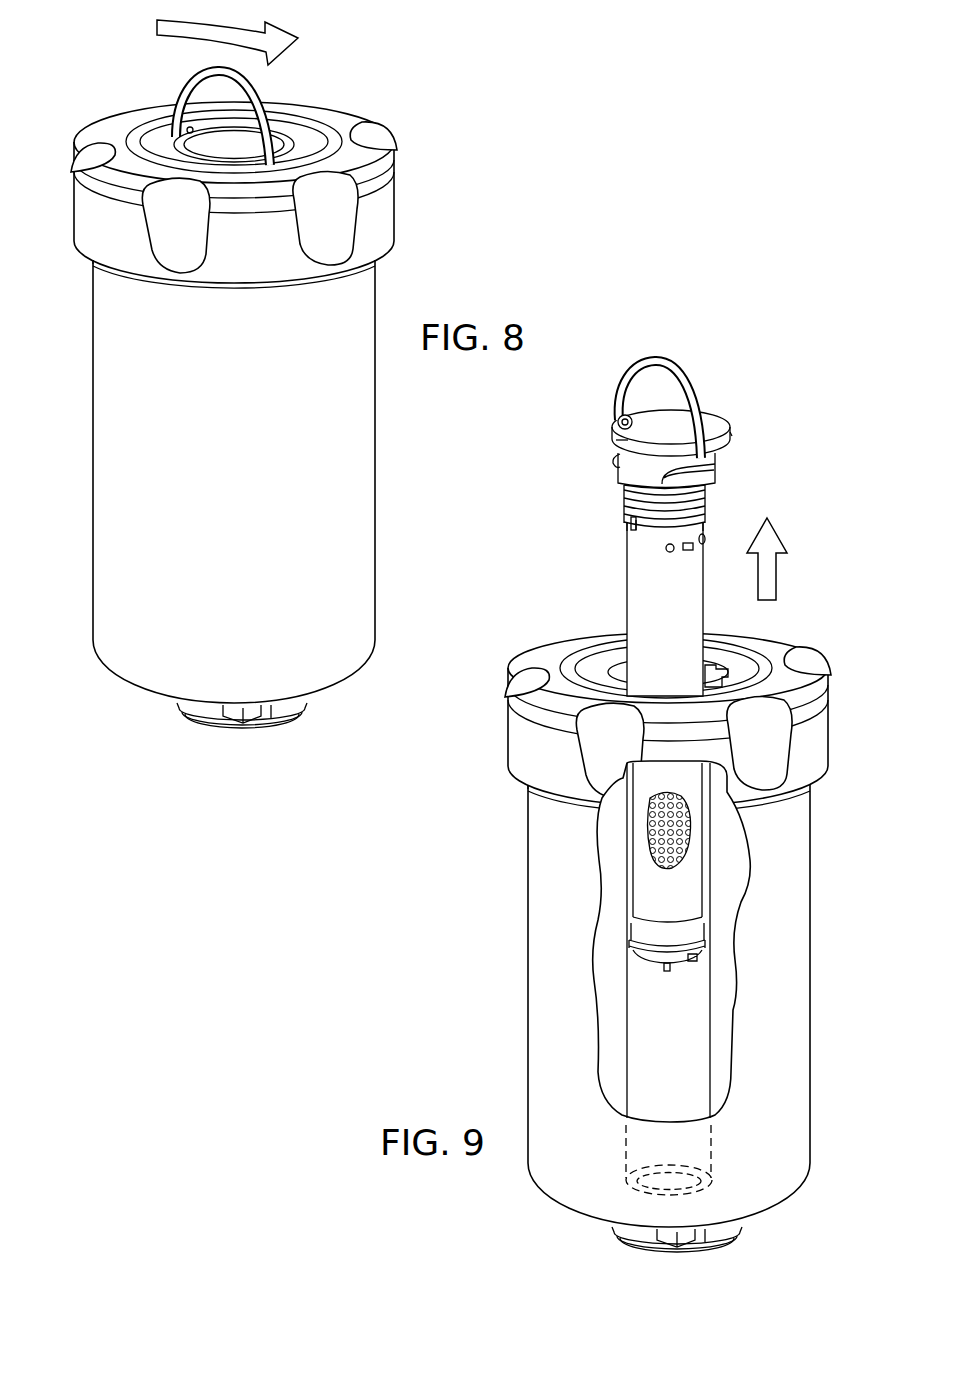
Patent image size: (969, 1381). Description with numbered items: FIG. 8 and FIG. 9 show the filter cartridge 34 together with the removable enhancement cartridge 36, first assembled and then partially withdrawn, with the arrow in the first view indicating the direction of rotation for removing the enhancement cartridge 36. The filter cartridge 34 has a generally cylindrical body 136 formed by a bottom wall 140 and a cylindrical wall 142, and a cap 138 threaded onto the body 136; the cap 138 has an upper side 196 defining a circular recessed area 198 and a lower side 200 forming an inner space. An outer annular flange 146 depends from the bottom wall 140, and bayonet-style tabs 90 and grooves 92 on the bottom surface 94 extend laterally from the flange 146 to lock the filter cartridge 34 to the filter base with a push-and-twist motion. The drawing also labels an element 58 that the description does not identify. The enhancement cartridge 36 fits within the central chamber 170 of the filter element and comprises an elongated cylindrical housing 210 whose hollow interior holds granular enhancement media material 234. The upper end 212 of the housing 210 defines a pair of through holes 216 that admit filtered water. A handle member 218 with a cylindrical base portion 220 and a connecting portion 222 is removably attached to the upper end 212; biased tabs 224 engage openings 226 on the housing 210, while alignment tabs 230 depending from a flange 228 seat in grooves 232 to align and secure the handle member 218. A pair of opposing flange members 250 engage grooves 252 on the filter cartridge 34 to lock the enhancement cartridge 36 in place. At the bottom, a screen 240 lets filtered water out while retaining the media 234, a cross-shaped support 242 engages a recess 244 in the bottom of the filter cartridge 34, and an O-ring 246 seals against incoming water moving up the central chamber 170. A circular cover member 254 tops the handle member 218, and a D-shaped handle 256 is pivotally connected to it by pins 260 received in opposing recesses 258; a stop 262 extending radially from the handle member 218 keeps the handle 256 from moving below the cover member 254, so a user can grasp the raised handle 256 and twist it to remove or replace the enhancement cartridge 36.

In FIG. 8, the filter cartridge 34 is at (390, 475).
In FIG. 9, the filter cartridge 34 is at (500, 925).
In FIG. 8, the enhancement cartridge 36 is at (278, 133).
In FIG. 9, the enhancement cartridge 36 is at (737, 458).
In FIG. 8, the housing sidewall 58 is at (342, 413).
In FIG. 9, the housing sidewall 58 is at (775, 945).
In FIG. 8, the tabs 90 is at (285, 708).
In FIG. 9, the tabs 90 is at (720, 1237).
In FIG. 8, the grooves 92 is at (198, 710).
In FIG. 9, the grooves 92 is at (637, 1237).
In FIG. 8, the bottom surface 94 is at (142, 703).
In FIG. 9, the bottom surface 94 is at (580, 1225).
In FIG. 8, the body 136 is at (168, 515).
In FIG. 9, the body 136 is at (568, 1052).
In FIG. 8, the cap 138 is at (395, 207).
In FIG. 9, the cap 138 is at (830, 737).
In FIG. 8, the bottom wall 140 is at (348, 678).
In FIG. 9, the bottom wall 140 is at (785, 1205).
In FIG. 8, the cylindrical wall 142 is at (318, 567).
In FIG. 9, the cylindrical wall 142 is at (752, 1095).
In FIG. 8, the outer annular flange 146 is at (227, 728).
In FIG. 9, the outer annular flange 146 is at (663, 1253).
In FIG. 9, the central chamber 170 is at (710, 673).
In FIG. 8, the upper side 196 is at (120, 130).
In FIG. 9, the upper side 196 is at (552, 655).
In FIG. 8, the recessed area 198 is at (317, 140).
In FIG. 9, the recessed area 198 is at (753, 668).
In FIG. 8, the lower side 200 is at (82, 250).
In FIG. 9, the lower side 200 is at (515, 773).
In FIG. 9, the housing 210 is at (662, 610).
In FIG. 9, the upper end 212 is at (600, 534).
In FIG. 9, the through holes 216 is at (706, 540).
In FIG. 8, the handle member 218 is at (150, 80).
In FIG. 9, the handle member 218 is at (717, 392).
In FIG. 9, the base portion 220 is at (633, 470).
In FIG. 9, the connecting portion 222 is at (637, 497).
In FIG. 9, the biased tabs 224 is at (670, 553).
In FIG. 9, the openings 226 is at (694, 550).
In FIG. 9, the flange 228 is at (642, 473).
In FIG. 9, the alignment tabs 230 is at (628, 518).
In FIG. 9, the grooves 232 is at (633, 531).
In FIG. 9, the enhancement media material 234 is at (695, 838).
In FIG. 9, the screen 240 is at (693, 967).
In FIG. 9, the cross-shaped support 242 is at (655, 973).
In FIG. 9, the recess 244 is at (640, 1172).
In FIG. 9, the O-ring 246 is at (642, 948).
In FIG. 9, the flange members 250 is at (710, 475).
In FIG. 9, the grooves 252 is at (618, 672).
In FIG. 8, the cover member 254 is at (197, 142).
In FIG. 9, the cover member 254 is at (717, 427).
In FIG. 8, the D-shaped handle 256 is at (253, 88).
In FIG. 9, the D-shaped handle 256 is at (690, 392).
In FIG. 9, the recesses 258 is at (616, 421).
In FIG. 9, the pins 260 is at (622, 417).
In FIG. 9, the stop 262 is at (622, 462).